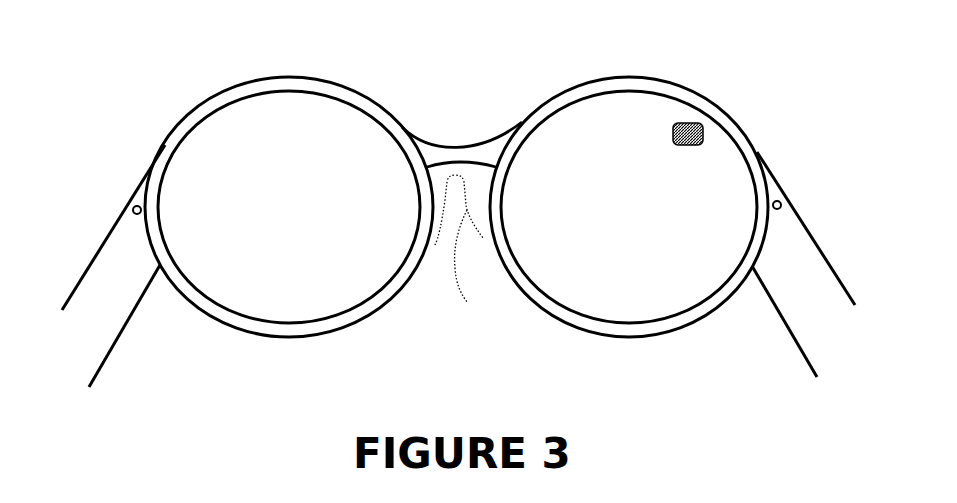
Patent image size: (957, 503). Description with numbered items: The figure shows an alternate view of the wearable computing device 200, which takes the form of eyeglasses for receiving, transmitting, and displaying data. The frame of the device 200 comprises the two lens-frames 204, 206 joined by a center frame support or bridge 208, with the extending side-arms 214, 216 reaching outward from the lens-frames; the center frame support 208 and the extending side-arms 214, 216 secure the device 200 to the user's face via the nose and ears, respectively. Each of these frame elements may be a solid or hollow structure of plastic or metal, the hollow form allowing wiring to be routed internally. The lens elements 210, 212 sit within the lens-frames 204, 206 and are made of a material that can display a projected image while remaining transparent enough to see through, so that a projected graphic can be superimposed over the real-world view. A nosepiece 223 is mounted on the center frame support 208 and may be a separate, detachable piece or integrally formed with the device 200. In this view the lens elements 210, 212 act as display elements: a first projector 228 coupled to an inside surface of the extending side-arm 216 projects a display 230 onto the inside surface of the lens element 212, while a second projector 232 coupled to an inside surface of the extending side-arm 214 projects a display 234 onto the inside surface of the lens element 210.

The device 200 is at (718, 412).
The lens-frame 204 is at (710, 313).
The lens-frame 206 is at (180, 298).
The center frame support 208 is at (443, 141).
The lens element 210 is at (628, 305).
The lens element 212 is at (298, 307).
The extending side-arm 214 is at (805, 223).
The extending side-arm 216 is at (110, 227).
The nosepiece 223 is at (462, 250).
The first projector 228 is at (142, 193).
The display 230 is at (267, 132).
The second projector 232 is at (772, 180).
The display 234 is at (697, 148).